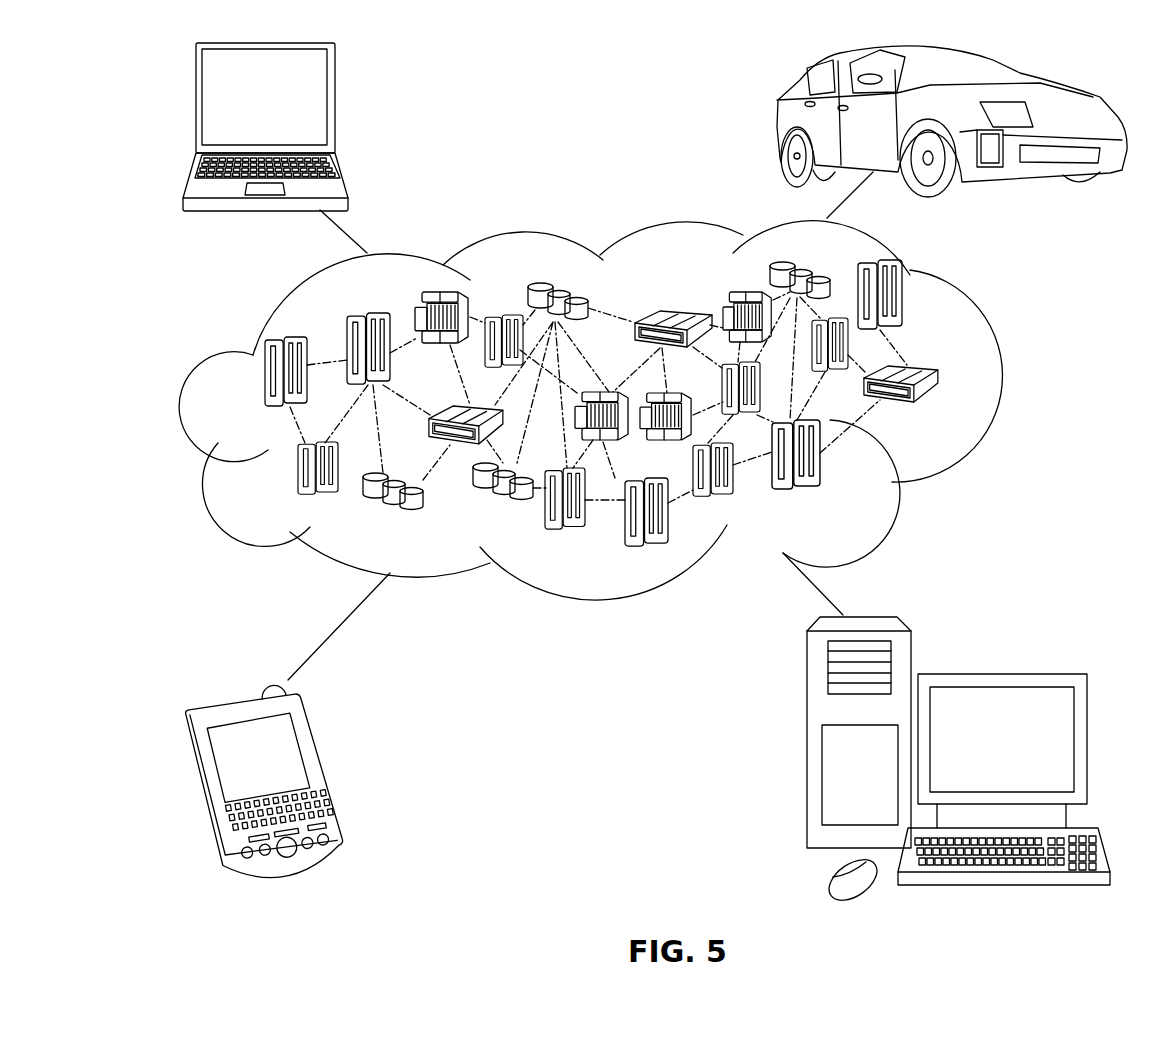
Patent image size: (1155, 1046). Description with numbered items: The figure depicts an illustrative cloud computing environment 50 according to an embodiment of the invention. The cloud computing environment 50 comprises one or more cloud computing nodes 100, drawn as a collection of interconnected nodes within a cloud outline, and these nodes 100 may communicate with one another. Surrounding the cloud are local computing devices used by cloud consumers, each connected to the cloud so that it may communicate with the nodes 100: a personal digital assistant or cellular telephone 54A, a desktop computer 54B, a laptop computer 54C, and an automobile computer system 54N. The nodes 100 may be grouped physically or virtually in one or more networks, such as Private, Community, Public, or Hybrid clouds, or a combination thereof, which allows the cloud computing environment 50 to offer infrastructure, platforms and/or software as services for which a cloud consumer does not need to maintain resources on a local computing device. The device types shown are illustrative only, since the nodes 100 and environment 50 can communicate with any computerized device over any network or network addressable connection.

The cloud computing environment 50 is at (1002, 380).
The cloud computing nodes 100 is at (942, 413).
The personal digital assistant or cellular telephone 54A is at (327, 770).
The desktop computer 54B is at (998, 672).
The laptop computer 54C is at (337, 106).
The automobile computer system 54N is at (777, 125).